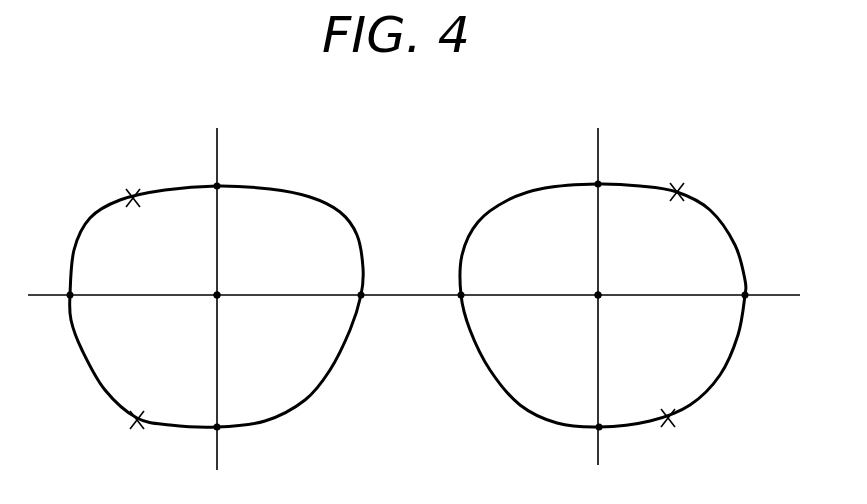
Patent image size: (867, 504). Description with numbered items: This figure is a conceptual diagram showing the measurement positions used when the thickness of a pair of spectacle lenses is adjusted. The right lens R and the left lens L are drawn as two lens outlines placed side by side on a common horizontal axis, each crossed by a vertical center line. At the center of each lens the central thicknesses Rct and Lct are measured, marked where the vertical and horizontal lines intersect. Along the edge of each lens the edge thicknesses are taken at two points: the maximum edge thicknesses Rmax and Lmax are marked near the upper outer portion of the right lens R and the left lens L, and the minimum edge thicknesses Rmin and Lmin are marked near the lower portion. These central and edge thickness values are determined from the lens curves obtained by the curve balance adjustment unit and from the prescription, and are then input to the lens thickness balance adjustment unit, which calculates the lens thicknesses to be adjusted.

The right lens R is at (216, 286).
The left lens L is at (603, 283).
The maximum edge thickness of right lens Rmax is at (141, 183).
The minimum edge thickness of right lens Rmin is at (139, 437).
The central thickness of right lens Rct is at (240, 282).
The maximum edge thickness of left lens Lmax is at (713, 184).
The minimum edge thickness of left lens Lmin is at (703, 431).
The central thickness of left lens Lct is at (620, 282).